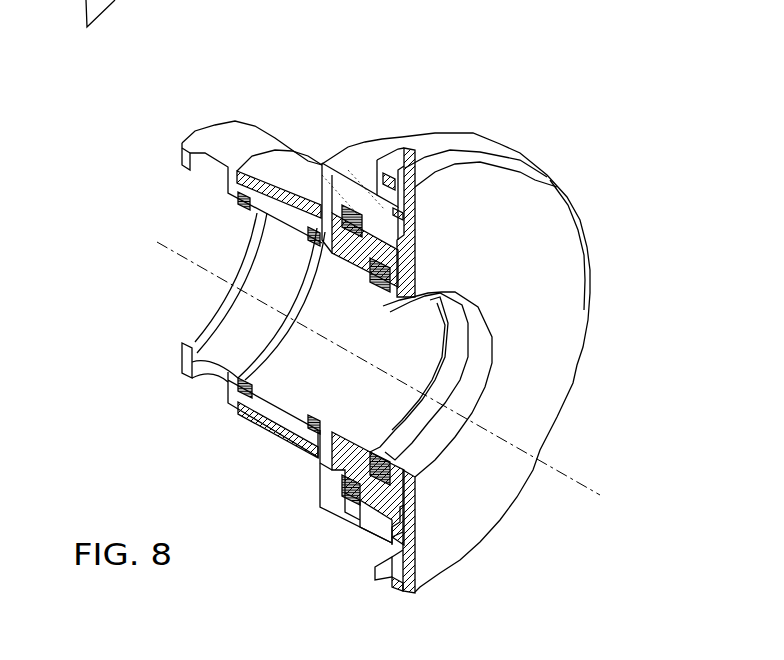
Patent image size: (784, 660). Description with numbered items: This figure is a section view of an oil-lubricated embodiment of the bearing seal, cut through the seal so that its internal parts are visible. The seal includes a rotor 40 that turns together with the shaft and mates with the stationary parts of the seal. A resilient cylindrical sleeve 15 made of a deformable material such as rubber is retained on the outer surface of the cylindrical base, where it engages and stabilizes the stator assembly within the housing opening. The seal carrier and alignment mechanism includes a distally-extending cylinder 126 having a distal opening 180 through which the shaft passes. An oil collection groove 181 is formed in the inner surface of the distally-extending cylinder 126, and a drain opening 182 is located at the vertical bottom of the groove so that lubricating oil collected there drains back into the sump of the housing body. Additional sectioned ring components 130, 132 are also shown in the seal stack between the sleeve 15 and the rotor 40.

The resilient cylindrical sleeve 15 is at (293, 160).
The rotor 40 is at (530, 131).
The distally-extending cylinder 126 is at (228, 143).
The seal carrier 130 is at (327, 117).
The retaining ring 132 is at (371, 116).
The distal opening 180 is at (184, 298).
The oil collection groove 181 is at (280, 268).
The drain opening 182 is at (185, 400).